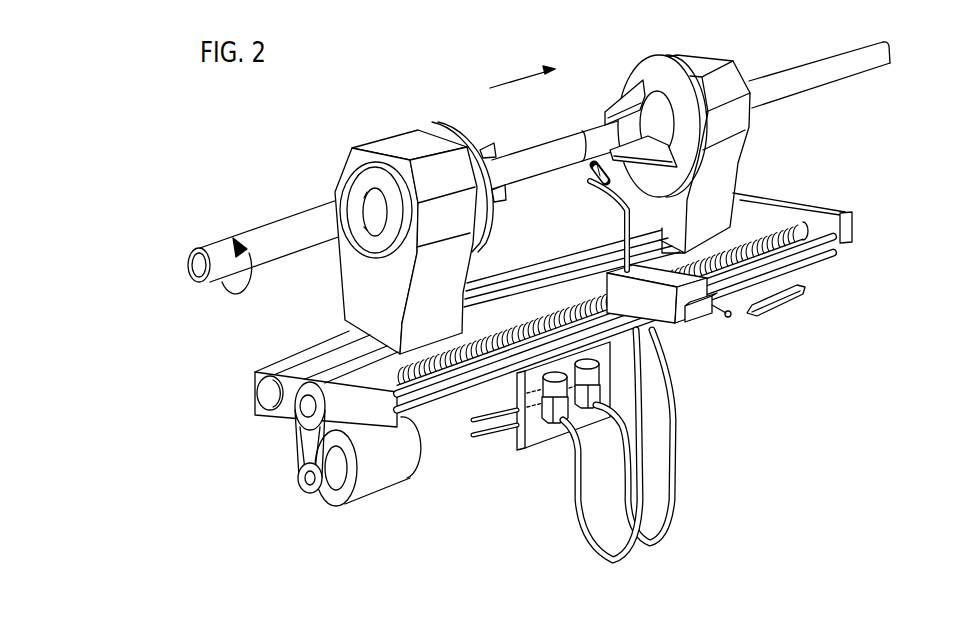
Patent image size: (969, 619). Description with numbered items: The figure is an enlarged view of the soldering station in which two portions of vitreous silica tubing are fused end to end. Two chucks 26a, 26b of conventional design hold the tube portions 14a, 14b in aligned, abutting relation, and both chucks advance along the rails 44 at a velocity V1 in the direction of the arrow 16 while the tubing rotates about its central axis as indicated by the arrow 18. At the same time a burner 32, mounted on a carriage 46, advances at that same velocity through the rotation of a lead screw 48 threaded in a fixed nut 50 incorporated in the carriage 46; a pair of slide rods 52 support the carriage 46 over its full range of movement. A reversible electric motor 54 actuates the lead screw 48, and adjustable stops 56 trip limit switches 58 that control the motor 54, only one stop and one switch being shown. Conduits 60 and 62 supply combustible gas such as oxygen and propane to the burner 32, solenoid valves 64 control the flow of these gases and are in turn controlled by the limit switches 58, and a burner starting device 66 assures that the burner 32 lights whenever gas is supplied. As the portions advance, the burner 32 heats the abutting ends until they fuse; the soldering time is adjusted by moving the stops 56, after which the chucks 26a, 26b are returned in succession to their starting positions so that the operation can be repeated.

The tube portion 14a is at (295, 218).
The tube portion 14b is at (840, 55).
The arrow 16 is at (513, 100).
The arrow 18 is at (236, 246).
The chuck 26a is at (388, 143).
The chuck 26b is at (702, 57).
The burner 32 is at (614, 166).
The rails 44 is at (335, 360).
The carriage 46 is at (663, 327).
The lead screw 48 is at (567, 298).
The fixed nut 50 is at (618, 270).
The slide rods 52 is at (800, 262).
The reversible electric motor 54 is at (380, 477).
The adjustable stops 56 is at (783, 300).
The limit switches 58 is at (700, 315).
The conduit 60 is at (477, 418).
The conduit 62 is at (503, 428).
The solenoid valves 64 is at (556, 423).
The burner starting device 66 is at (583, 178).